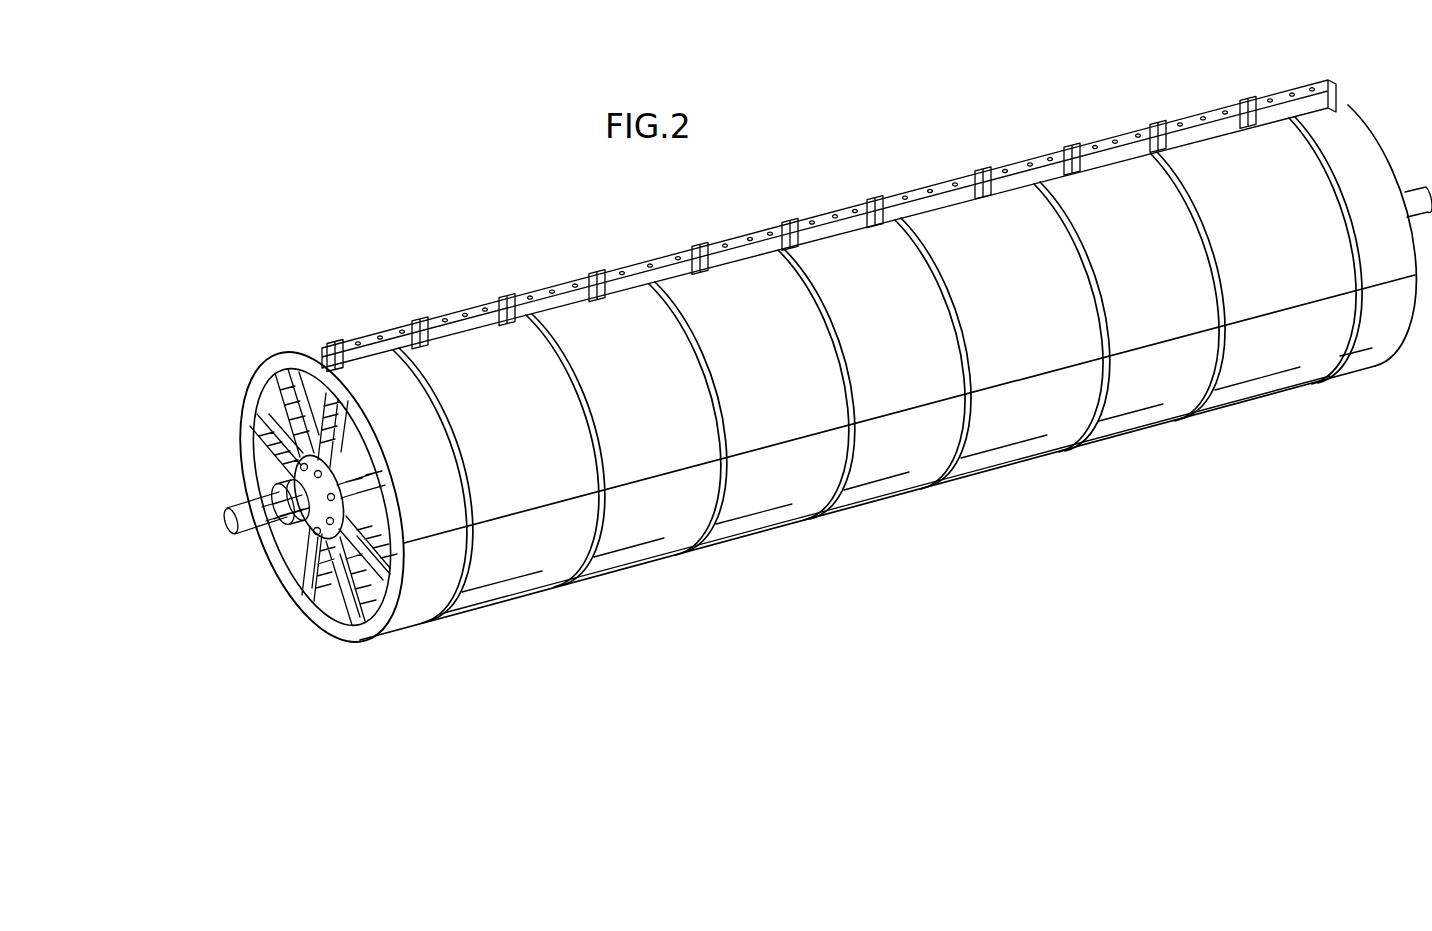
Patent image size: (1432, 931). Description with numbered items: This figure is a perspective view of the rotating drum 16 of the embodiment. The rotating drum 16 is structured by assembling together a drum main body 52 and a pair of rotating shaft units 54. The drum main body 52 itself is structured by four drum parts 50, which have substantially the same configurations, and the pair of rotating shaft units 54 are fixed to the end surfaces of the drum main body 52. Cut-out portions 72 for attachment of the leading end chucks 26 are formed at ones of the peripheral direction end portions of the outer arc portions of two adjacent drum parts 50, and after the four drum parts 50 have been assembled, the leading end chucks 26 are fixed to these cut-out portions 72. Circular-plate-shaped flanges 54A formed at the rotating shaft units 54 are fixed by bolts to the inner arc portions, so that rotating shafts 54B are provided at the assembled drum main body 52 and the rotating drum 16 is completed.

The rotating drum 16 is at (163, 353).
The leading end chucks 26 is at (465, 307).
The drum parts 50 is at (274, 372).
The drum main body 52 is at (240, 406).
The rotating shaft units 54 is at (236, 502).
The flanges 54A is at (318, 590).
The rotating shafts 54B is at (268, 527).
The cut-out portions 72 is at (333, 347).